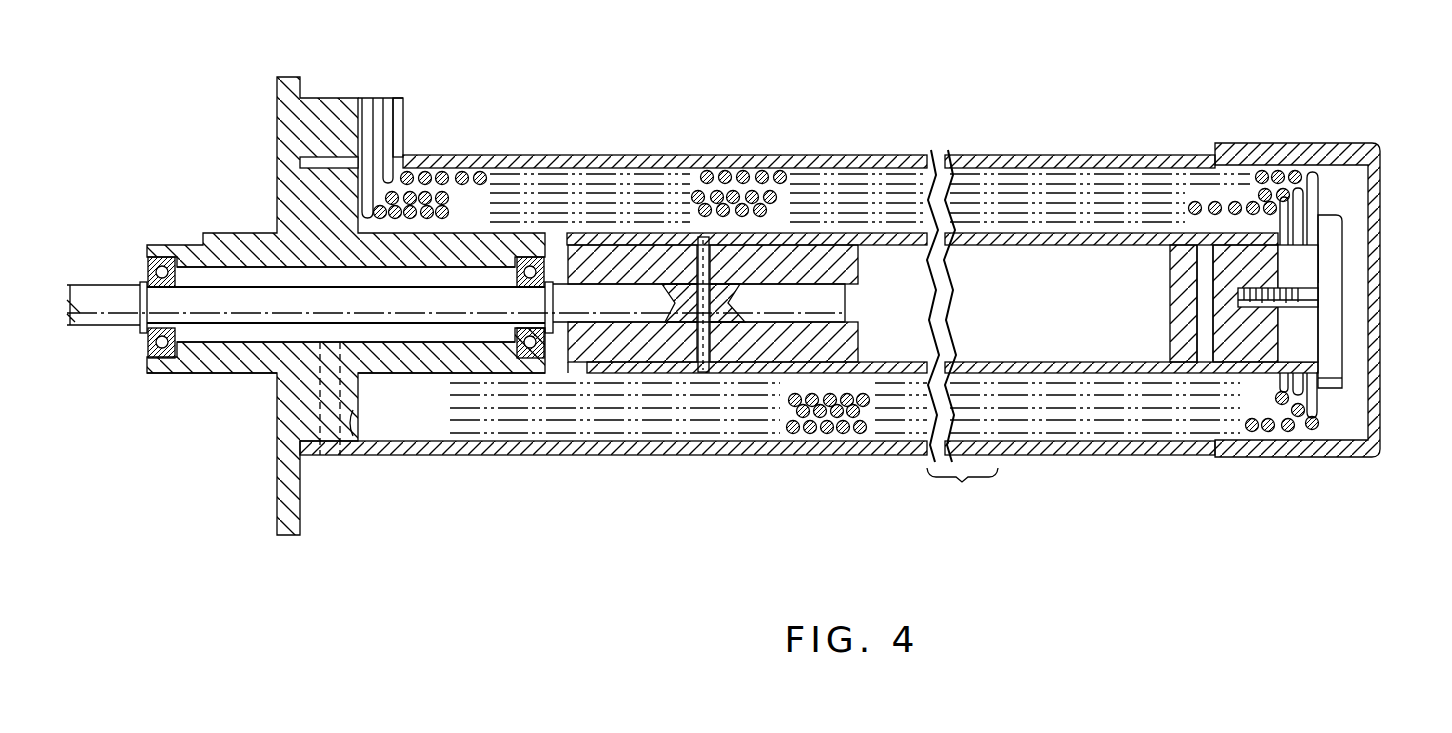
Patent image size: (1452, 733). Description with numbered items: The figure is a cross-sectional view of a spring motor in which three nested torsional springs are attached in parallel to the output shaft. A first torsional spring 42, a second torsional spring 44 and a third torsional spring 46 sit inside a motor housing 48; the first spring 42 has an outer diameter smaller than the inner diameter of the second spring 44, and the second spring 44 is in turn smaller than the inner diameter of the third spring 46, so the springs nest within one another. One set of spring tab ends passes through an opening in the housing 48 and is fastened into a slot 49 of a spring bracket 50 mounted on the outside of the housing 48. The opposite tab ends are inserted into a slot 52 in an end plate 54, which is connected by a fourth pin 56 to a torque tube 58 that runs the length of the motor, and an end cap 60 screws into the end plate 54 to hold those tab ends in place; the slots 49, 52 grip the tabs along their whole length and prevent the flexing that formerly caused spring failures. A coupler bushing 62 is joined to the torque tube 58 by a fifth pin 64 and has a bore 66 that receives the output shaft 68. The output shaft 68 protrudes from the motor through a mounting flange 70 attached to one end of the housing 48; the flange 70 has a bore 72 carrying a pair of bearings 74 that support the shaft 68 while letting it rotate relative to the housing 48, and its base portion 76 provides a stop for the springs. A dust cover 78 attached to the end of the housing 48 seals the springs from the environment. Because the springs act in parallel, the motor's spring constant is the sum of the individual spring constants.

The first torsional spring 42 is at (367, 98).
The second torsional spring 44 is at (380, 98).
The third torsional spring 46 is at (392, 117).
The motor housing 48 is at (1103, 447).
The slot 49 is at (403, 147).
The spring bracket 50 is at (325, 98).
The slot 52 is at (1300, 343).
The end plate 54 is at (1172, 262).
The fourth pin 56 is at (1205, 310).
The torque tube 58 is at (1163, 365).
The end cap 60 is at (1332, 253).
The coupler bushing 62 is at (580, 345).
The fifth pin 64 is at (703, 367).
The bore 66 is at (842, 298).
The output shaft 68 is at (103, 327).
The mounting flange 70 is at (308, 430).
The bore 72 is at (223, 345).
The bearings 74 is at (157, 256).
The base portion 76 is at (353, 425).
The dust cover 78 is at (1383, 413).